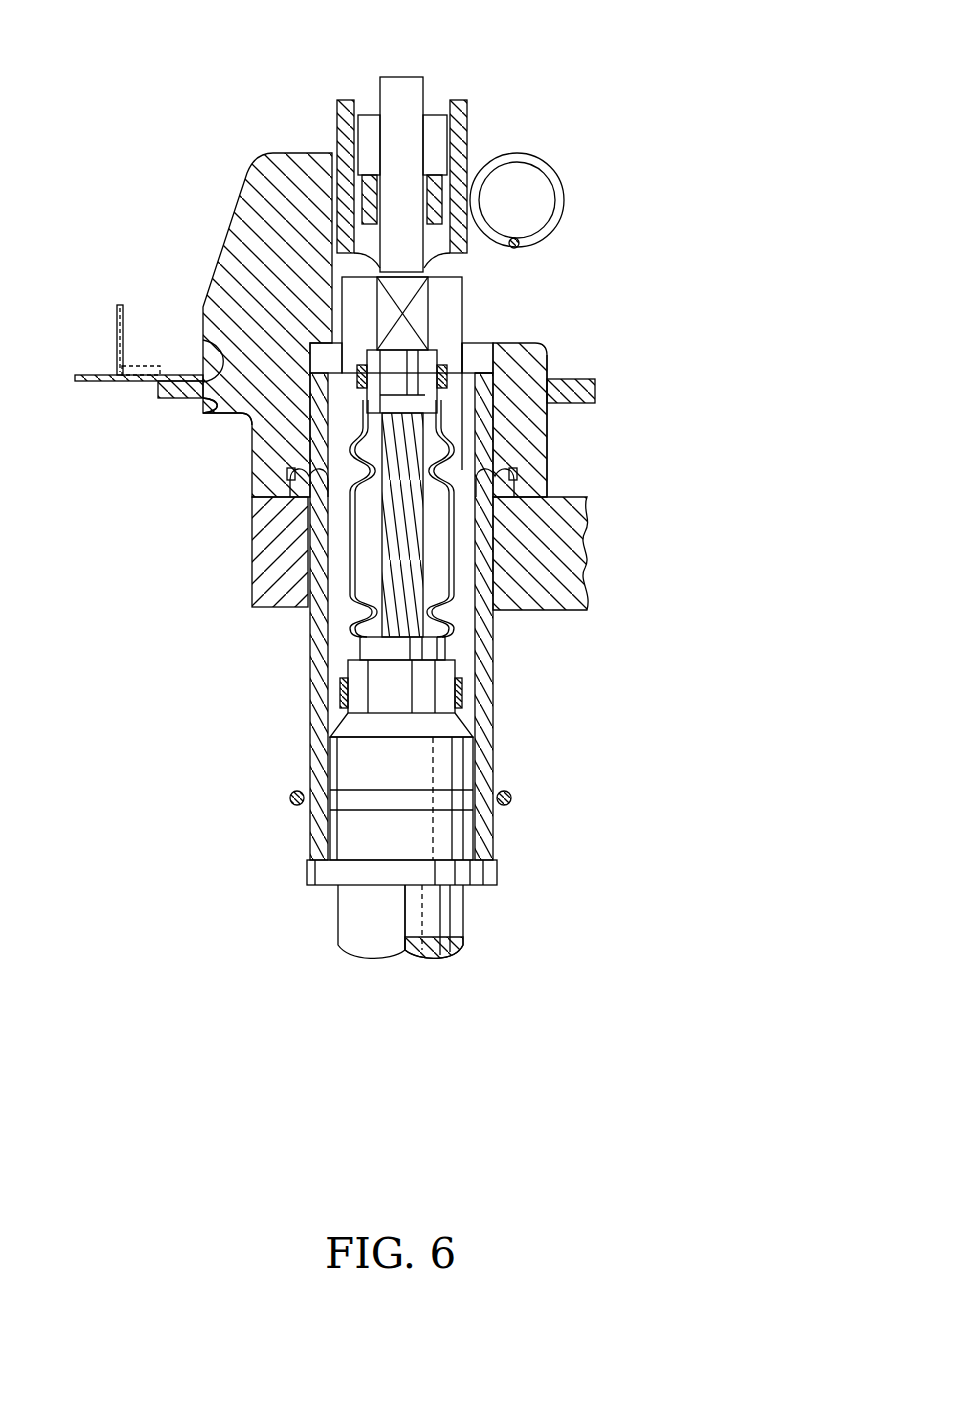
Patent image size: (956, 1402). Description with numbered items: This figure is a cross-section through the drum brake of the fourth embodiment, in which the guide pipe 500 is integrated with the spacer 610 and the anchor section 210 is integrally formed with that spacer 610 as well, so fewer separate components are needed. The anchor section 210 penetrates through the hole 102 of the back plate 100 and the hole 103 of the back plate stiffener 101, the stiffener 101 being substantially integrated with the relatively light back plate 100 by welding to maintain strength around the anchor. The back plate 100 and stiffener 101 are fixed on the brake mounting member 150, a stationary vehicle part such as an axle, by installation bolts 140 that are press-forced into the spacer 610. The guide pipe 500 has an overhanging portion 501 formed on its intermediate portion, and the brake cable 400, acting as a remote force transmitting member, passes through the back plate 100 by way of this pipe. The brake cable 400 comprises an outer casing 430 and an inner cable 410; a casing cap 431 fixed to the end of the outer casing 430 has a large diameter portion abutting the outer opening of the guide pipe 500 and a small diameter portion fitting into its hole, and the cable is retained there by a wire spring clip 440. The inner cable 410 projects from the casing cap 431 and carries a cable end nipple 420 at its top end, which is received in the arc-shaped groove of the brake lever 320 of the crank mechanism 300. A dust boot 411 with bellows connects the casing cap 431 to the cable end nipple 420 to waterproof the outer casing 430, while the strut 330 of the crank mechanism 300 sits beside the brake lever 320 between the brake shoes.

The back plate 100 is at (598, 382).
The back plate stiffener 101 is at (598, 398).
The hole of the back plate 102 is at (203, 340).
The hole of the stiffener 103 is at (209, 414).
The installation bolt 140 is at (450, 270).
The brake mounting member 150 is at (571, 622).
The anchor section 210 is at (233, 206).
The crank mechanism 300 is at (345, 96).
The brake lever 320 is at (433, 188).
The strut 330 is at (460, 100).
The brake cable 400 is at (470, 922).
The inner cable 410 is at (252, 570).
The dust boot 411 is at (350, 600).
The cable end nipple 420 is at (403, 77).
The outer casing 430 is at (360, 923).
The casing cap 431 is at (345, 836).
The wire spring clip 440 is at (510, 800).
The guide pipe 500 is at (506, 752).
The overhanging portion 501 is at (290, 487).
The spacer 610 is at (556, 455).